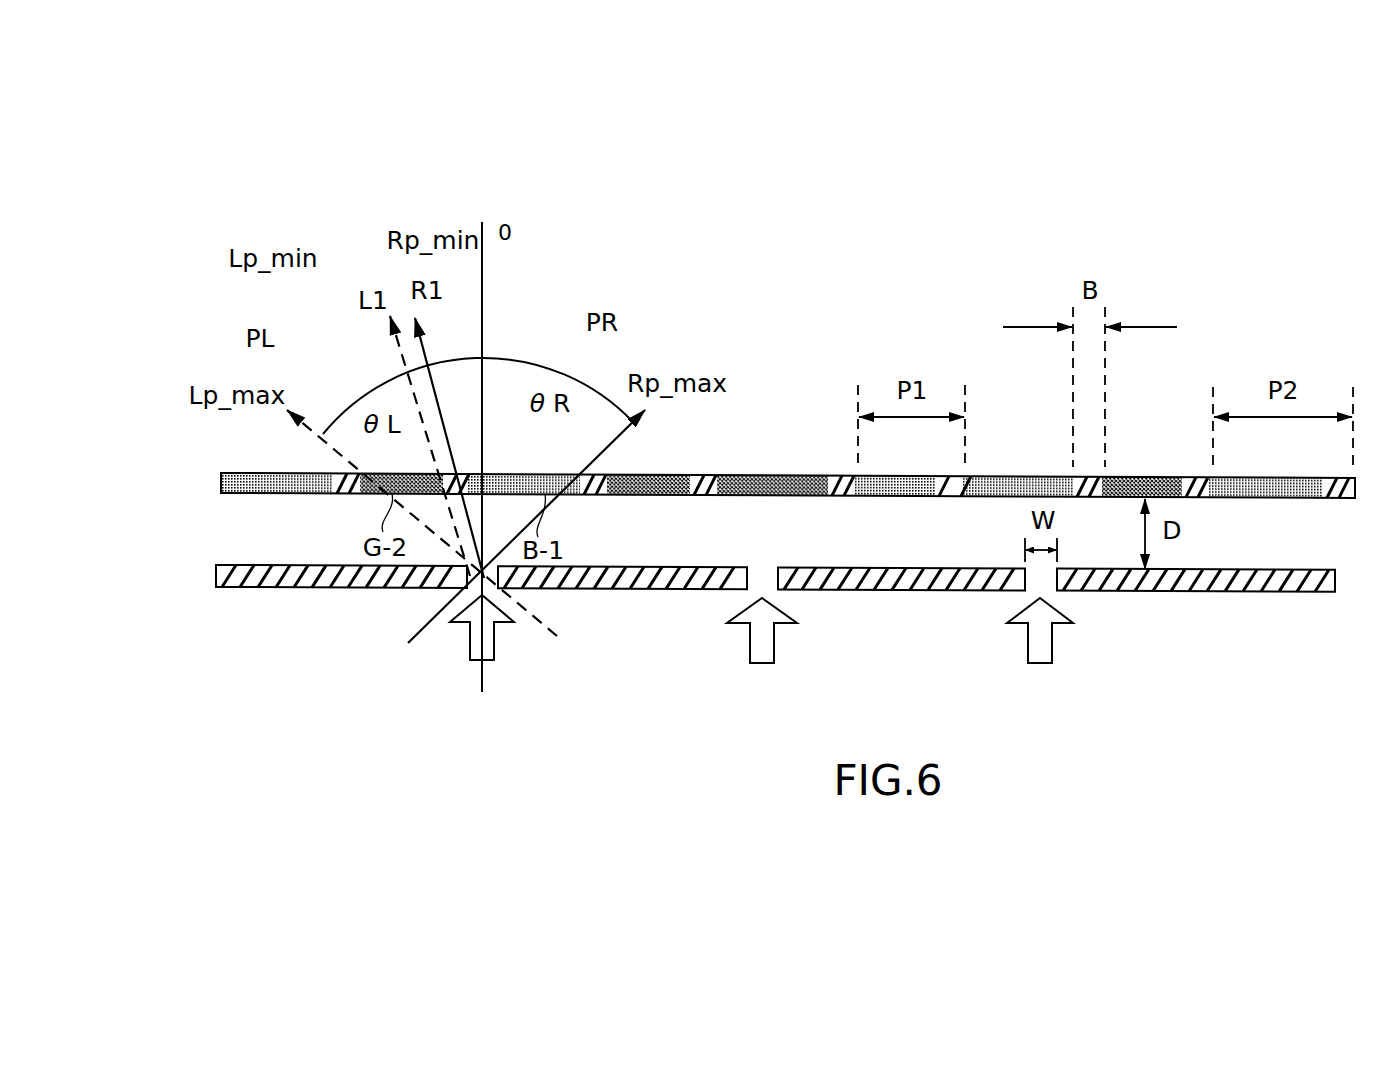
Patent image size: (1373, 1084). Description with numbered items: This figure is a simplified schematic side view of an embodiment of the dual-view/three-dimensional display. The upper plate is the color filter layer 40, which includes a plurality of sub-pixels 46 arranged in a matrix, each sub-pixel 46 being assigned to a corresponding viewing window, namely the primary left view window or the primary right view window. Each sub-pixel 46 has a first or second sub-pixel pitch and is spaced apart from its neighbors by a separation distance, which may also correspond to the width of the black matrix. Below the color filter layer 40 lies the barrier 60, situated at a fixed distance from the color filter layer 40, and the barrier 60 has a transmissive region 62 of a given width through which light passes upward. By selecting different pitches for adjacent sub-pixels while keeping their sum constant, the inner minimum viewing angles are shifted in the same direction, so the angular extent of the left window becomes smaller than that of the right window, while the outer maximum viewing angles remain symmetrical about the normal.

The color filter layer 40 is at (221, 481).
The sub-pixel 46 is at (775, 478).
The barrier 60 is at (216, 575).
The transmissive region 62 is at (765, 578).